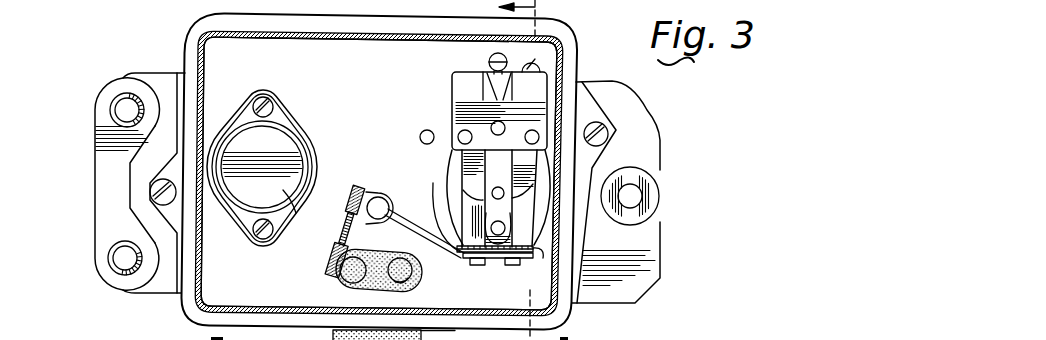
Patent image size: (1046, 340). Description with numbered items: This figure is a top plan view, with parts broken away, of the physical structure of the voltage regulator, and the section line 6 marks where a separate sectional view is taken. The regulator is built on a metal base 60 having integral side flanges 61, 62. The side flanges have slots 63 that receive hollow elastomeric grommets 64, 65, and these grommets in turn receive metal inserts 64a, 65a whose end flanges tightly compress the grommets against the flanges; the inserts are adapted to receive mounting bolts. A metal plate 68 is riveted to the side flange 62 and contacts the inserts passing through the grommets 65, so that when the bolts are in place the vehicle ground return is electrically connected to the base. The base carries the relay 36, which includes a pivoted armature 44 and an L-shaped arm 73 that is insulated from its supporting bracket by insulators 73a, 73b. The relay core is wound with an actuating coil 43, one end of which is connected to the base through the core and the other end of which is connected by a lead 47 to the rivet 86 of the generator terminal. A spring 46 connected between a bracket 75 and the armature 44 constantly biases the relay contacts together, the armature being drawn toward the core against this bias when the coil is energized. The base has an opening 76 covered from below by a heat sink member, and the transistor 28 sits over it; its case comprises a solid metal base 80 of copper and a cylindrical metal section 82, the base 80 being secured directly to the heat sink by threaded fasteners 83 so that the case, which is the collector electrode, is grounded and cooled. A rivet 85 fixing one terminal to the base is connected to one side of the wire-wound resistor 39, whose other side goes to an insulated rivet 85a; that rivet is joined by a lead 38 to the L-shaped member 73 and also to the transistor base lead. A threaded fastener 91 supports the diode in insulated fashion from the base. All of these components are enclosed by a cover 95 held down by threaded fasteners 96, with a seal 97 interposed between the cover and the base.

The section line 6— 6 is at (532, 170).
The transistor 28 is at (302, 152).
The relay 36 is at (449, 122).
The lead 38 is at (407, 231).
The wire-wound resistor 39 is at (347, 221).
The actuating coil winding 43 is at (541, 200).
The armature 44 is at (453, 110).
The spring 46 is at (489, 60).
The lead 47 is at (440, 207).
The metal base 60 is at (360, 53).
The side flange 61 is at (638, 128).
The side flange 62 is at (160, 73).
The slot 63 is at (657, 181).
The elastomeric grommet 64 is at (652, 200).
The metal insert 64a is at (645, 212).
The elastomeric grommet 65 is at (99, 112).
The metal insert 65a is at (117, 100).
The metal plate 68 is at (107, 145).
The L-shaped arm 73 is at (500, 259).
The insulator 73a is at (483, 266).
The insulator 73b is at (526, 254).
The bracket 75 is at (542, 63).
The opening 76 is at (286, 114).
The solid metal base 80 is at (295, 125).
The cylindrical metal section 82 is at (288, 208).
The threaded fastener 83 is at (268, 102).
The rivet 85 is at (352, 275).
The rivet 85a is at (381, 203).
The rivet 86 is at (411, 279).
The threaded fastener 91 is at (418, 138).
The cover 95 is at (562, 44).
The threaded fastener 96 is at (157, 191).
The seal 97 is at (208, 64).